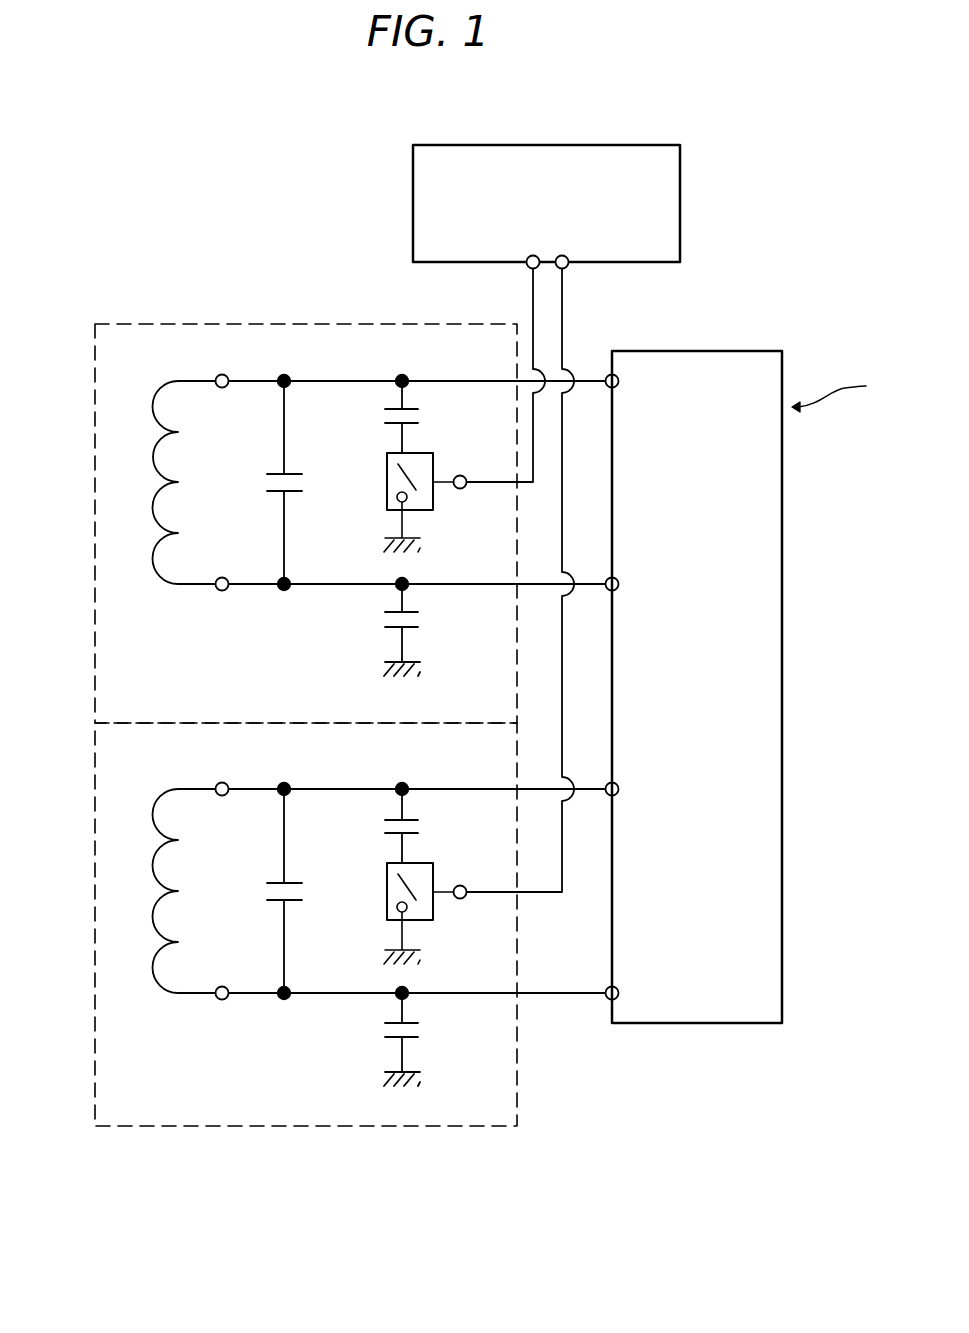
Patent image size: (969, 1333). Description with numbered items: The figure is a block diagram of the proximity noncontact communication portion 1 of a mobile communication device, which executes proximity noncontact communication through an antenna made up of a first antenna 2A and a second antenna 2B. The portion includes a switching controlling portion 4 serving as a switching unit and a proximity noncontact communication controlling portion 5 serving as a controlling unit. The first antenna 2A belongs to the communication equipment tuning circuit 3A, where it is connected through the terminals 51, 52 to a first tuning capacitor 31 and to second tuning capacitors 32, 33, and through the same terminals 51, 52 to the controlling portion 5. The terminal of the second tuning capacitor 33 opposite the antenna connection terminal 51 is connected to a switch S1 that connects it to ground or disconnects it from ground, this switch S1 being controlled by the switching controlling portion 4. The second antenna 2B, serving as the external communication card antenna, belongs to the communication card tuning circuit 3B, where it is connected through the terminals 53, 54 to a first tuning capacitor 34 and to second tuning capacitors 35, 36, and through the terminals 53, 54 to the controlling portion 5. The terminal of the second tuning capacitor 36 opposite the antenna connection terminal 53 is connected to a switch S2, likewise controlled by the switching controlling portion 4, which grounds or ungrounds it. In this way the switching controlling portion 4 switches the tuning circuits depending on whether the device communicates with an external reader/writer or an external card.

The proximity noncontact communication portion 1 is at (886, 400).
The switching controlling portion 4 is at (681, 198).
The proximity noncontact communication controlling portion 5 is at (700, 350).
The communication equipment tuning circuit 3A is at (250, 322).
The communication card tuning circuit 3B is at (438, 1128).
The first antenna 2A is at (152, 508).
The second antenna 2B is at (152, 874).
The first tuning capacitor 31 is at (302, 486).
The second tuning capacitor 32 is at (418, 620).
The second tuning capacitor 33 is at (418, 417).
The first tuning capacitor 34 is at (302, 890).
The second tuning capacitor 35 is at (418, 1030).
The second tuning capacitor 36 is at (418, 826).
The terminal 51 is at (222, 374).
The terminal 52 is at (222, 591).
The terminal 53 is at (222, 796).
The terminal 54 is at (222, 1000).
The switch S1 is at (418, 512).
The switch S2 is at (420, 922).